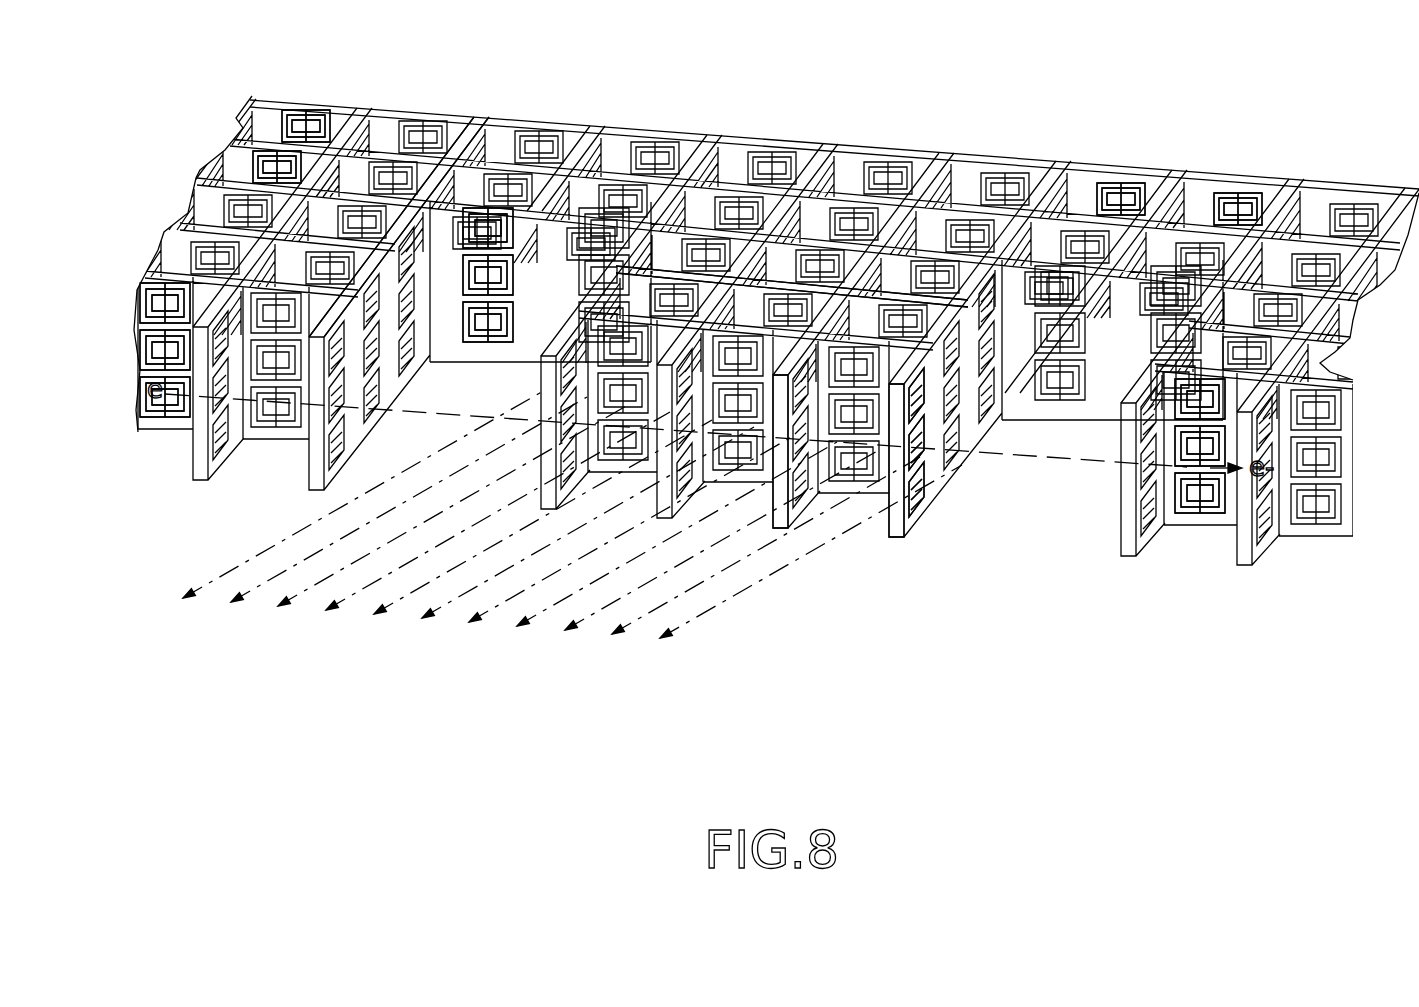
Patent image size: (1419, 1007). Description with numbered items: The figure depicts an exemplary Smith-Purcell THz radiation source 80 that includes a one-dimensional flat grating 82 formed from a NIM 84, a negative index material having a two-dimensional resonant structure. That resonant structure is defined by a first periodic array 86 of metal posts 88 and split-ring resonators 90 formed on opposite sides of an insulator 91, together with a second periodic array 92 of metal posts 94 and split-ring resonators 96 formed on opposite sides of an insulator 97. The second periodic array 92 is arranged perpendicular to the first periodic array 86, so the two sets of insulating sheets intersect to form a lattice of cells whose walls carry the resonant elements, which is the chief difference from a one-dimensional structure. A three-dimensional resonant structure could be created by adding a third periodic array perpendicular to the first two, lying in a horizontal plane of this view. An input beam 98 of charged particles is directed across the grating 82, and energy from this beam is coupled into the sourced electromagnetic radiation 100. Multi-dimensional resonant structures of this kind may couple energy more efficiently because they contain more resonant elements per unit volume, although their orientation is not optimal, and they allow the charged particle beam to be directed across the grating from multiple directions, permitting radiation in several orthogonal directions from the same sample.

The Smith-Purcell THz radiation source 80 is at (575, 693).
The one-dimensional flat grating 82 is at (523, 368).
The NIM 84 is at (683, 211).
The first periodic array 86 is at (137, 237).
The metal posts 88 is at (322, 250).
The split-ring resonators 90 is at (330, 258).
The insulator 91 is at (357, 258).
The second periodic array 92 is at (1310, 180).
The metal posts 94 is at (814, 368).
The split-ring resonators 96 is at (898, 420).
The insulator 97 is at (906, 500).
The input beam 98 is at (1173, 470).
The sourced electromagnetic radiation 100 is at (574, 650).